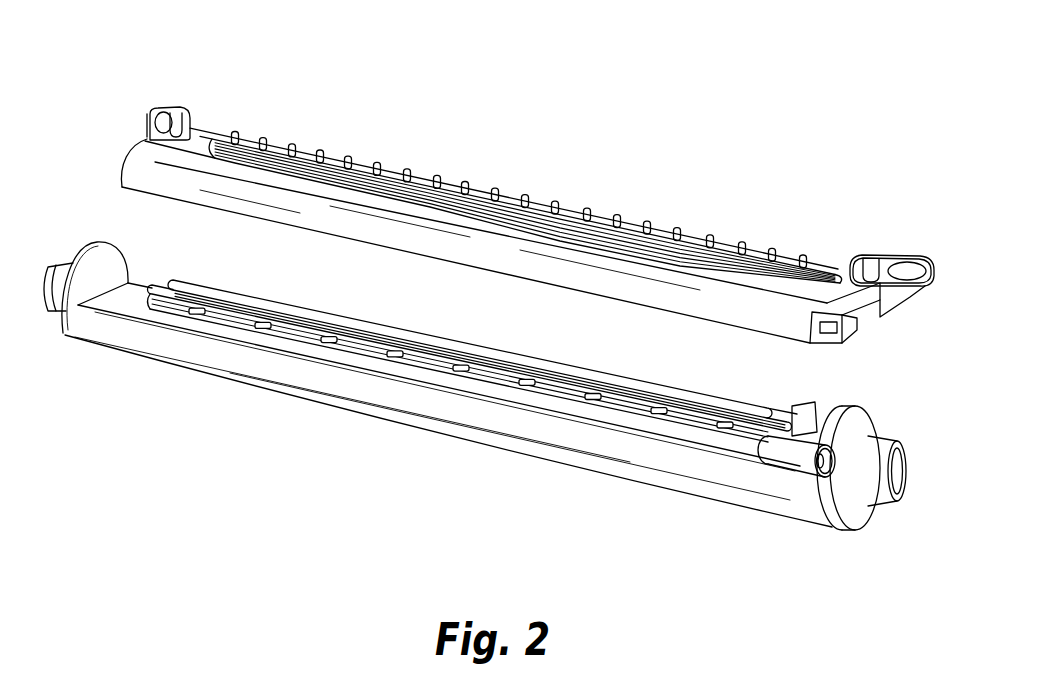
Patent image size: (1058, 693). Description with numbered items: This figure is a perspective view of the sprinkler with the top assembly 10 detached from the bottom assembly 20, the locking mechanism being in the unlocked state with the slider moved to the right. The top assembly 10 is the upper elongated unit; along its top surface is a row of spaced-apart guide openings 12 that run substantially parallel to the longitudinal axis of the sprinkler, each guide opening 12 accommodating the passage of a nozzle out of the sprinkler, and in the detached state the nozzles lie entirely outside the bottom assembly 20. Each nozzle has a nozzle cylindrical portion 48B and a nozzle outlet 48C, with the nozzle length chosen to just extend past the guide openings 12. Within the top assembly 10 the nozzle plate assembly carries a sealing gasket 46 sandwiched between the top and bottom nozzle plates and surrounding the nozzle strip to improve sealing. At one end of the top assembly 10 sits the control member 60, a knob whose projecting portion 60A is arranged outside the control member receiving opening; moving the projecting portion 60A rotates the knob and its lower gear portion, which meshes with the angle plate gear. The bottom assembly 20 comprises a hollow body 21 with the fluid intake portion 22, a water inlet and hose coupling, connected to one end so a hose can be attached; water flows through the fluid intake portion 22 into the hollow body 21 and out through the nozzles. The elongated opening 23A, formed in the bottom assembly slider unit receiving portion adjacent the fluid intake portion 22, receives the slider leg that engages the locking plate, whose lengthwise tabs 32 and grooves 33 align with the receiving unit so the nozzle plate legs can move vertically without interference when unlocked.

The top assembly 10 is at (533, 191).
The guide openings 12 is at (783, 262).
The bottom assembly 20 is at (503, 416).
The hollow body 21 is at (73, 337).
The fluid intake portion 22 is at (828, 530).
The elongated opening 23A is at (782, 470).
The tabs 32 is at (590, 406).
The grooves 33 is at (458, 420).
The sealing gasket 46 is at (260, 300).
The nozzle cylindrical portion 48B is at (557, 202).
The nozzle outlet 48C is at (465, 186).
The control member 60 is at (893, 248).
The projecting portion 60A is at (172, 107).